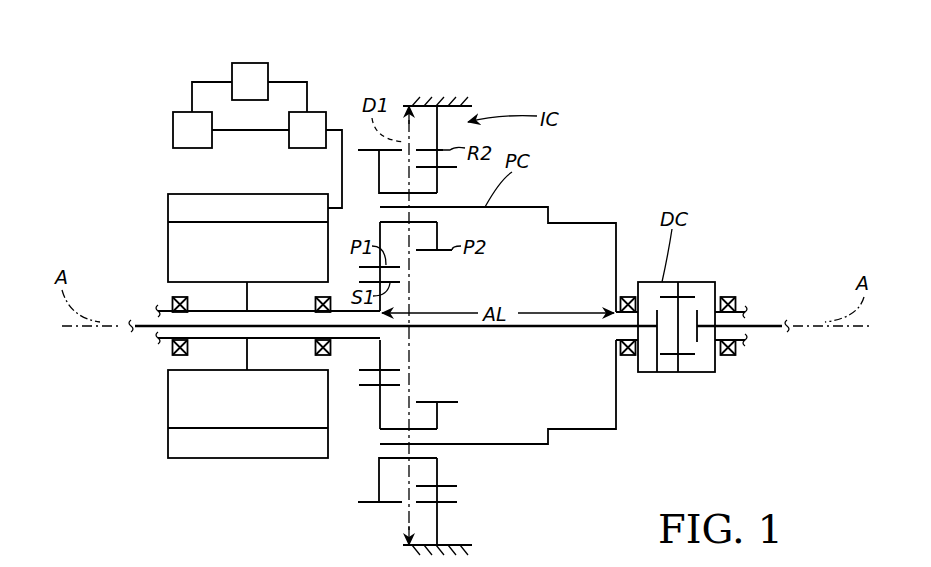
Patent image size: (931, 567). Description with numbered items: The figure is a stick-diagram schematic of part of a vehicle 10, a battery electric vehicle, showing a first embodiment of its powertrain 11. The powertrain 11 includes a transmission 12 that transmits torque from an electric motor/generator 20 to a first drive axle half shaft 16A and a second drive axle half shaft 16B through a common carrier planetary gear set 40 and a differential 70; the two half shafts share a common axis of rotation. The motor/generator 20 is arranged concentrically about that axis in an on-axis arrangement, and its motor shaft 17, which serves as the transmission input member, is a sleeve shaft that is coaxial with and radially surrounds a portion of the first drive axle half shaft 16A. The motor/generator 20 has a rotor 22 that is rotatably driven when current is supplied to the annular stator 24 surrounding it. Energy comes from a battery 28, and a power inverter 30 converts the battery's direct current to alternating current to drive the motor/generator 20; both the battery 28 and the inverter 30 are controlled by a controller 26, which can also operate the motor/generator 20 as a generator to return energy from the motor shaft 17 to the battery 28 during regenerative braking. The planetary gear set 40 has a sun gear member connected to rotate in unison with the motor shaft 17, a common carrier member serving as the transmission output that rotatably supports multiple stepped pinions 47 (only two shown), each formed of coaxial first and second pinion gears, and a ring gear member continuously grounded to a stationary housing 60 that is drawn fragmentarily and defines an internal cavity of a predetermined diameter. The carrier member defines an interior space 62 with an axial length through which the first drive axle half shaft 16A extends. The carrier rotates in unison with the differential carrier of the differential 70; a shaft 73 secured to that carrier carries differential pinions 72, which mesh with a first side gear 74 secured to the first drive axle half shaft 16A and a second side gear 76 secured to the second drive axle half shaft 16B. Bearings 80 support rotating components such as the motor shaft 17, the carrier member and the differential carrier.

The vehicle 10 is at (90, 121).
The powertrain 11 is at (453, 60).
The transmission 12 is at (626, 139).
The first drive axle half shaft 16A is at (150, 328).
The second drive axle half shaft 16B is at (757, 323).
The motor shaft 17 is at (260, 312).
The electric motor/generator 20 is at (106, 231).
The rotor 22 is at (168, 250).
The annular stator 24 is at (168, 210).
The controller 26 is at (248, 63).
The battery 28 is at (185, 112).
The power inverter 30 is at (316, 112).
The planetary gear set 40 is at (340, 480).
The stepped pinion 47 is at (420, 222).
The stationary housing 60 is at (470, 100).
The interior space 62 is at (573, 246).
The differential 70 is at (686, 386).
The differential pinions 72 is at (683, 292).
The shaft 73 is at (658, 352).
The first side gear 74 is at (660, 308).
The second side gear 76 is at (699, 310).
The bearings 80 is at (175, 355).